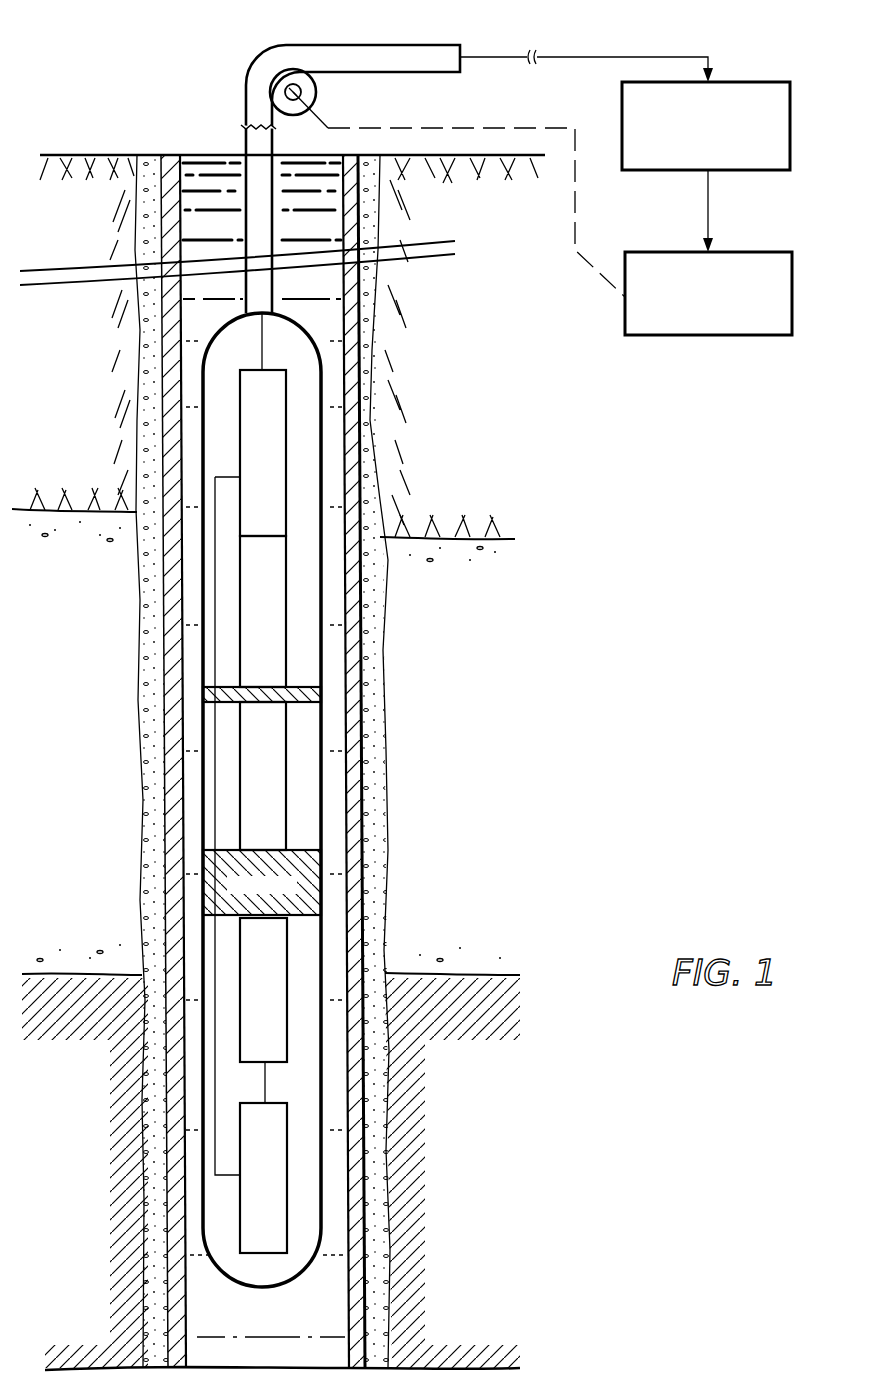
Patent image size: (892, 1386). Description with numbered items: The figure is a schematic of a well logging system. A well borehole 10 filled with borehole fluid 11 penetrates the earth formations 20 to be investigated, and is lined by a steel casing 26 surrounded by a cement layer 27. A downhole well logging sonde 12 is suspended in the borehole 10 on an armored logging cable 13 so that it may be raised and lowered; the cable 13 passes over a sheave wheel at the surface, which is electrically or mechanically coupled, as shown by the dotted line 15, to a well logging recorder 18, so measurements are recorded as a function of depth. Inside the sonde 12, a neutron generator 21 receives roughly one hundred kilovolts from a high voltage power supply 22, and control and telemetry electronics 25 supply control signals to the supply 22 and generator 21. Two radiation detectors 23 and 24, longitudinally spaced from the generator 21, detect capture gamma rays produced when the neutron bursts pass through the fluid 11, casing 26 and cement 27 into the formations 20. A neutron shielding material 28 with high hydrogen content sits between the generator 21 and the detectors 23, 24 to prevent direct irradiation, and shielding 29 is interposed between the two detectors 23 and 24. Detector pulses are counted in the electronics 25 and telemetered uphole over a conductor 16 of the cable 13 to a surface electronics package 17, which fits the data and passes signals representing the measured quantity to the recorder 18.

The well borehole 10 is at (184, 142).
The borehole fluid 11 is at (318, 292).
The downhole well logging sonde 12 is at (321, 342).
The armored logging cable 13 is at (400, 45).
The dotted line 15 is at (448, 125).
The conductor 16 is at (632, 55).
The surface electronics 17 is at (793, 135).
The well logging recorder 18 is at (793, 297).
The earth formations 20 is at (463, 665).
The neutron generator 21 is at (327, 947).
The high voltage power supply 22 is at (290, 1152).
The radiation detector 23 is at (288, 770).
The radiation detector 24 is at (286, 606).
The control and telemetry electronics 25 is at (287, 443).
The steel casing 26 is at (353, 482).
The cement layer 27 is at (377, 813).
The neutron shielding material 28 is at (318, 883).
The shielding 29 is at (321, 691).